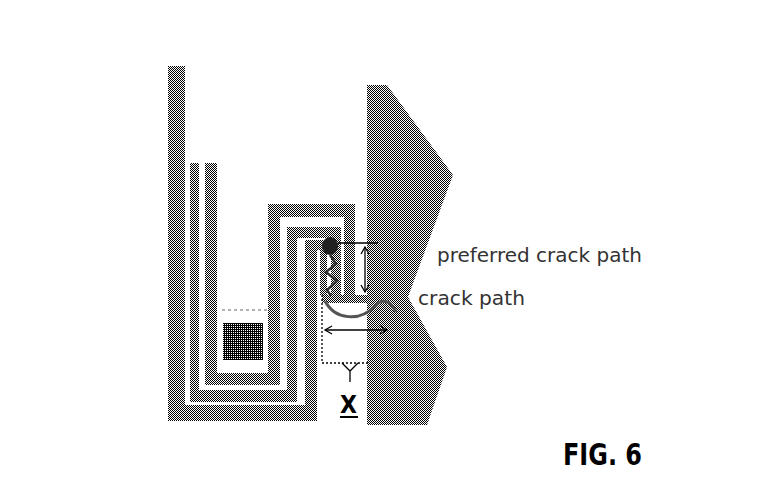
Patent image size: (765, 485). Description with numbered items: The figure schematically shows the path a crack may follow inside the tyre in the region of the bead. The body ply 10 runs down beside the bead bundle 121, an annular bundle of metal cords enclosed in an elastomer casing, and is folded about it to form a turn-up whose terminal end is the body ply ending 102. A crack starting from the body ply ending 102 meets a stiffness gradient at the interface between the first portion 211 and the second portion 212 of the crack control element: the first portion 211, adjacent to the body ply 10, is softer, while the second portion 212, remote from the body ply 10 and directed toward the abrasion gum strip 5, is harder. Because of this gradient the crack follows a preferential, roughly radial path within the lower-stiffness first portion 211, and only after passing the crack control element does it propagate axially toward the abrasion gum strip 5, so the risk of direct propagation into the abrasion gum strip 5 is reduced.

The body ply 10 is at (175, 93).
The first portion 211 is at (192, 165).
The second portion 212 is at (293, 210).
The body ply ending 102 is at (313, 242).
The abrasion gum strip 5 is at (413, 183).
The bead bundle 121 is at (238, 335).